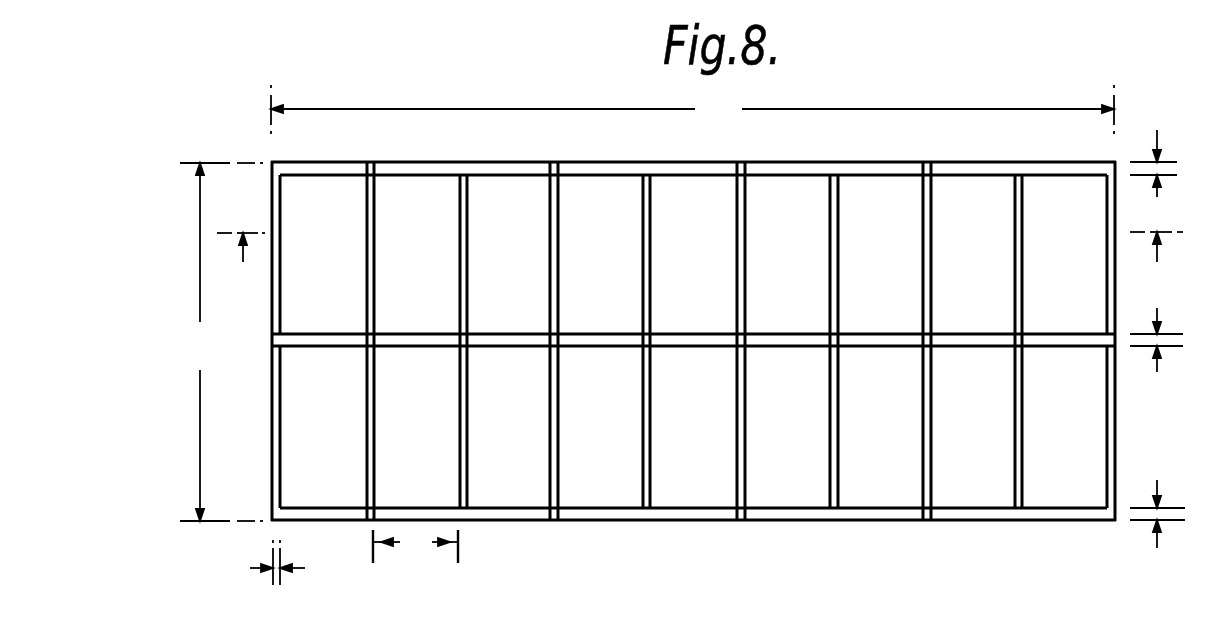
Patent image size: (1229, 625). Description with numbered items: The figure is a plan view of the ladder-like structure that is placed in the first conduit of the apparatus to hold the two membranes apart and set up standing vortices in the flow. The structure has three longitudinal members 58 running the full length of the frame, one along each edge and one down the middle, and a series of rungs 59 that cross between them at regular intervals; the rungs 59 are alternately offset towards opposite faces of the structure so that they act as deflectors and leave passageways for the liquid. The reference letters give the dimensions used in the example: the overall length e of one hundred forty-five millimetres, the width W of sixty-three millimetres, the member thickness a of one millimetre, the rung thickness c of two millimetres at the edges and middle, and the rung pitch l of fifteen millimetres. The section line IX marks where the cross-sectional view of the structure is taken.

The longitudinal members 58 is at (705, 341).
The rungs 59 is at (927, 470).
The overall length dimension e is at (692, 109).
The width dimension W is at (221, 342).
The member thickness dimension a is at (277, 579).
The rung spacing dimension l is at (415, 545).
The rung thickness dimension c is at (1170, 169).
The section line IX is at (700, 265).